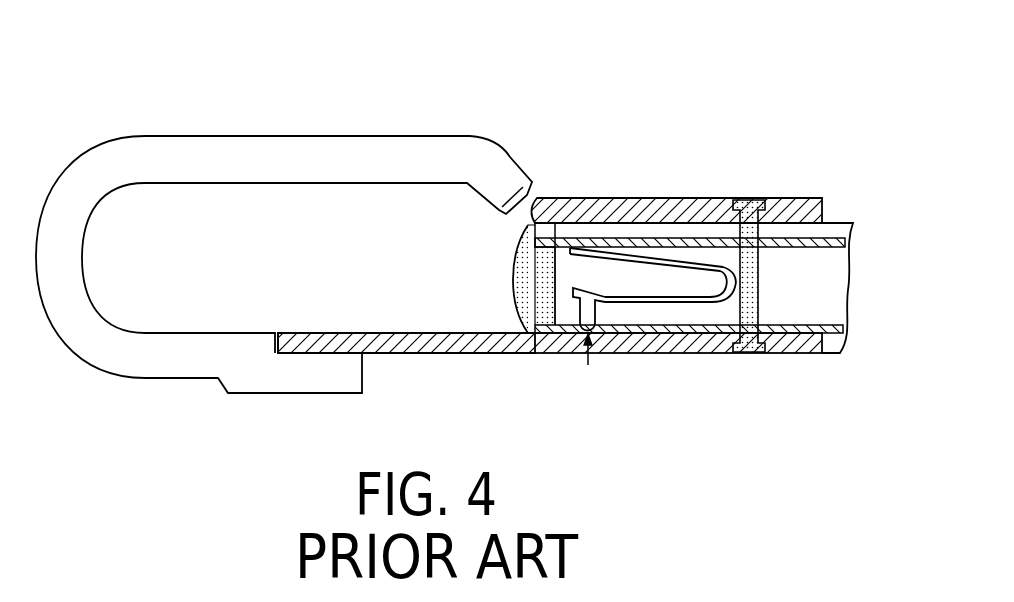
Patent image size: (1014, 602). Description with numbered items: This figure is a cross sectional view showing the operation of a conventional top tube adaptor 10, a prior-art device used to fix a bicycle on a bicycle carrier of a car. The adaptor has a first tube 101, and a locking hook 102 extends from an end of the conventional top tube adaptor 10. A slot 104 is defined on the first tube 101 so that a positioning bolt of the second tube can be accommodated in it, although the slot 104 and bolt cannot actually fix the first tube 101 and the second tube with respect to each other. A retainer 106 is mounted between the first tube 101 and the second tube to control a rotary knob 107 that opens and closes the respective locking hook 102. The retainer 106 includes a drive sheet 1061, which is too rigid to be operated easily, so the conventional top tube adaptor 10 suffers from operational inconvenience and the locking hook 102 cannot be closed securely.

The conventional top tube adaptor 10 is at (633, 172).
The first tube 101 is at (830, 347).
The locking hook 102 is at (292, 155).
The slot 104 is at (834, 231).
The retainer 106 is at (598, 307).
The drive sheet 1061 is at (688, 297).
The rotary knob 107 is at (413, 342).